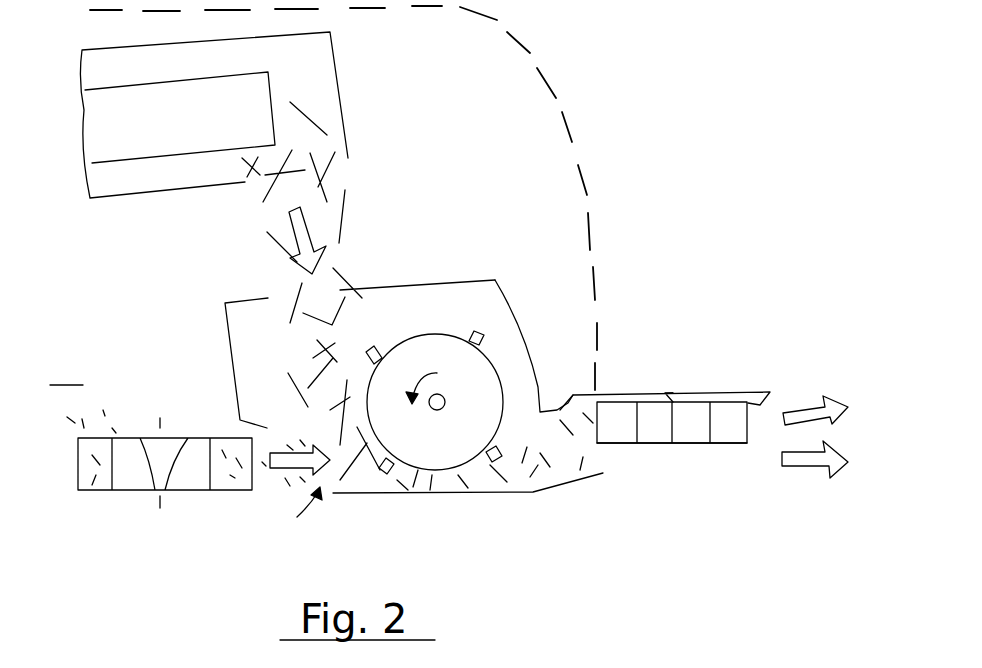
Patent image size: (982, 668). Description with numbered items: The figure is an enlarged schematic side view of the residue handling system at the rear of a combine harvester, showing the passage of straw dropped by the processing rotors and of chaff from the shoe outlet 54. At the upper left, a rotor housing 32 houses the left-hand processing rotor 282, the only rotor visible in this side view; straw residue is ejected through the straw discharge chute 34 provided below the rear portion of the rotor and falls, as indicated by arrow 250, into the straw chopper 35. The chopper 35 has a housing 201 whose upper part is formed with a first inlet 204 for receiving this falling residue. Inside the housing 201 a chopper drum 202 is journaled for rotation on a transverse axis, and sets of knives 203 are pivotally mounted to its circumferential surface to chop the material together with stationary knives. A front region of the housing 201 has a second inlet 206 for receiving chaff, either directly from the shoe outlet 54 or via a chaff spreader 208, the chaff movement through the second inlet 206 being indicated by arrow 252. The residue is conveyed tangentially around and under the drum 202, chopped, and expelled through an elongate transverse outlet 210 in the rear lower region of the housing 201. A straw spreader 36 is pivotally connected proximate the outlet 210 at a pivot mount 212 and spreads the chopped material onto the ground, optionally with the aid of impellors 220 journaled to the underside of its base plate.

The rotor housing 32 is at (185, 190).
The hopper wall 282 is at (147, 177).
The straw discharge chute 34 is at (333, 185).
The arrow indicating falling crop residue 250 is at (290, 252).
The first inlet 204 is at (362, 295).
The straw chopper 35 is at (455, 338).
The knives 203 is at (483, 330).
The housing 201 is at (518, 308).
The chopper drum 202 is at (498, 375).
The pivot mount 212 is at (587, 394).
The straw spreader 36 is at (712, 373).
The impellors 220 is at (717, 445).
The outlet 210 is at (607, 458).
The shoe outlet 54 is at (65, 370).
The chaff spreader 208 is at (105, 492).
The arrow indicating chaff movement 252 is at (288, 472).
The second inlet 206 is at (299, 519).